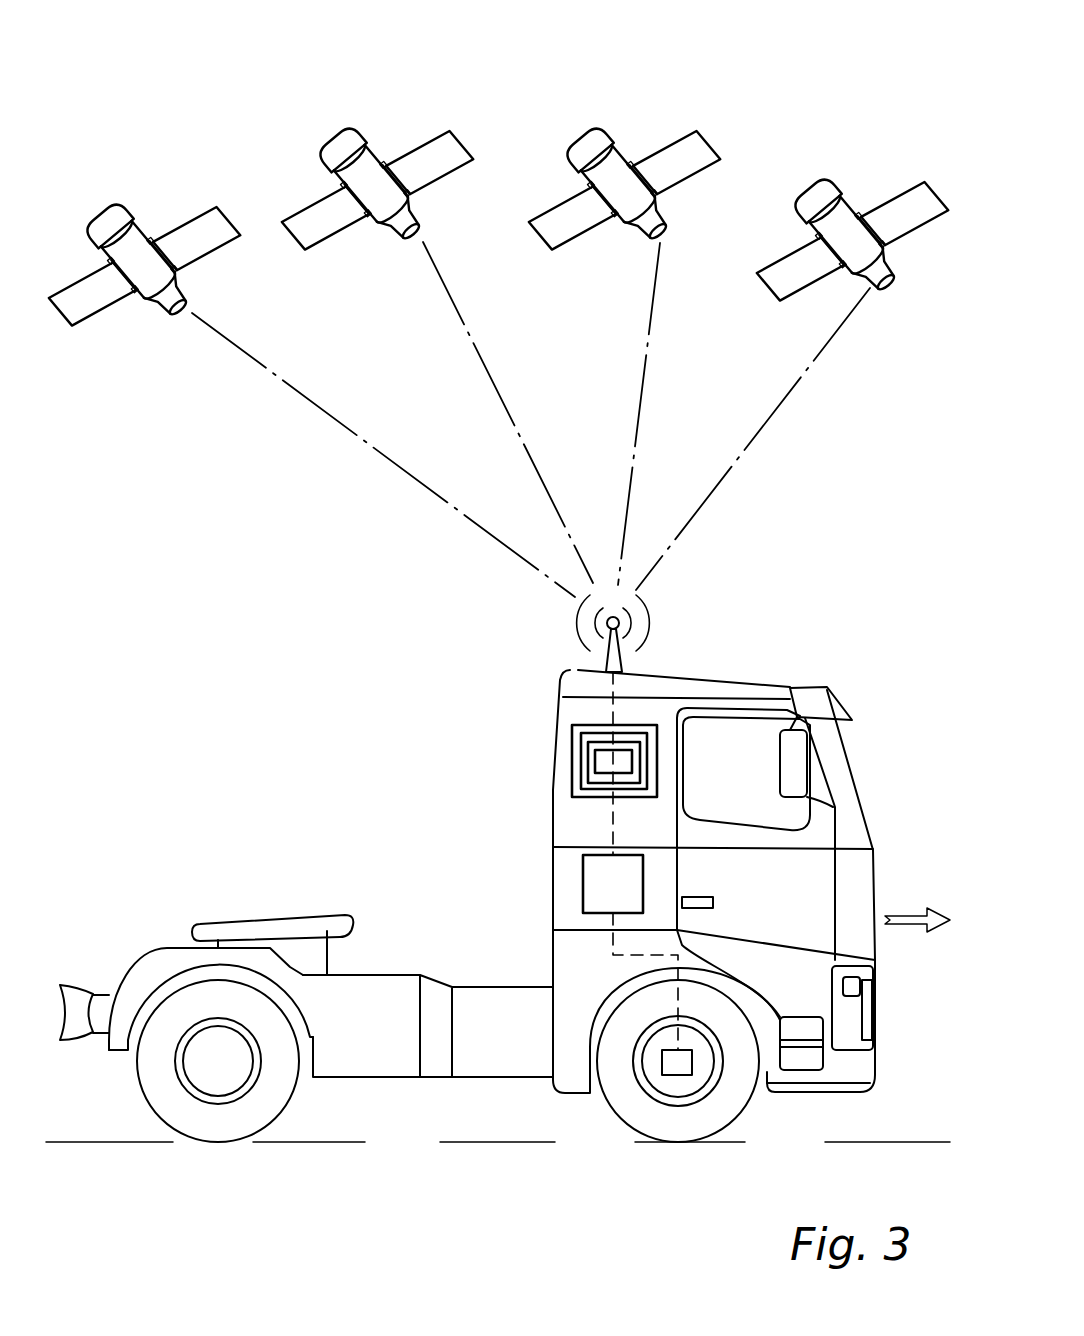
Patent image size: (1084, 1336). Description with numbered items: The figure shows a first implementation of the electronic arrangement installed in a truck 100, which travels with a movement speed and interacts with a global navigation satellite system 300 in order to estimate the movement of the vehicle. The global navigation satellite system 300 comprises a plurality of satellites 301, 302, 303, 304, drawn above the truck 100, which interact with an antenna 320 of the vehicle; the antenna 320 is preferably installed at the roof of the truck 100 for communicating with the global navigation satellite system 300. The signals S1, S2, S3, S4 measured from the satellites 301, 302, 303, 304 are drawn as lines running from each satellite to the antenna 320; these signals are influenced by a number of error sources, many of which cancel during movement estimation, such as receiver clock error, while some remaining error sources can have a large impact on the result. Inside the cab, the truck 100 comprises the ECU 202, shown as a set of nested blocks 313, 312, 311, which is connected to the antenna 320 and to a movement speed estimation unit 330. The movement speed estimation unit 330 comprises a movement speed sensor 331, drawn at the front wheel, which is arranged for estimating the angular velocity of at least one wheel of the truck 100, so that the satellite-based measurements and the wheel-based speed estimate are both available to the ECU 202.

The global navigation satellite system 300 is at (236, 43).
The satellite 301 is at (137, 231).
The satellite 302 is at (370, 152).
The satellite 303 is at (617, 152).
The satellite 304 is at (846, 203).
The signal S1 is at (317, 407).
The signal S2 is at (450, 313).
The signal S3 is at (652, 308).
The signal S4 is at (822, 352).
The truck 100 is at (318, 720).
The antenna 320 is at (608, 664).
The ECU 202 is at (577, 738).
The memory 313 is at (585, 752).
The antenna 312 is at (592, 758).
The processing circuitry 311 is at (612, 763).
The movement speed estimation unit 330 is at (583, 885).
The movement speed sensor 331 is at (680, 1076).